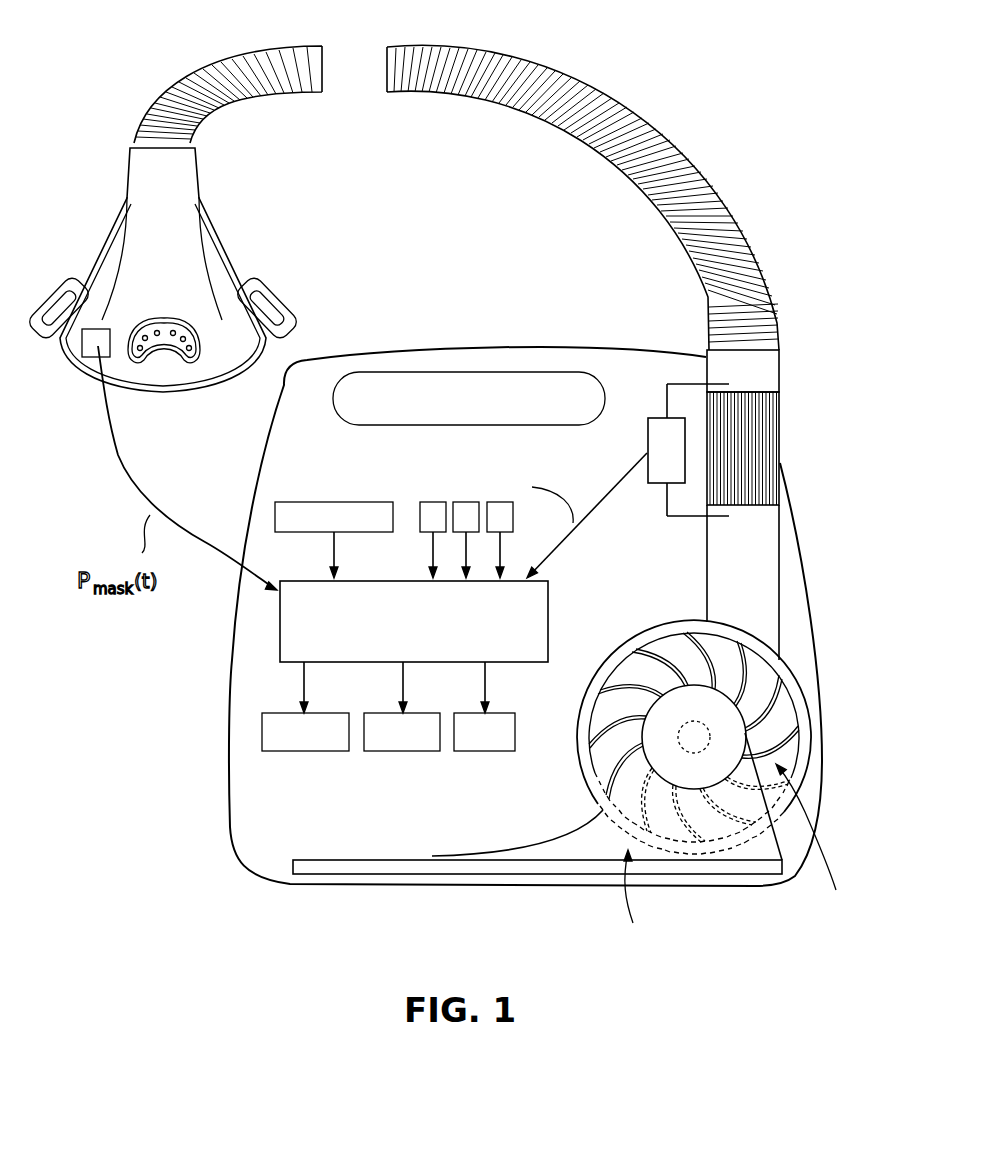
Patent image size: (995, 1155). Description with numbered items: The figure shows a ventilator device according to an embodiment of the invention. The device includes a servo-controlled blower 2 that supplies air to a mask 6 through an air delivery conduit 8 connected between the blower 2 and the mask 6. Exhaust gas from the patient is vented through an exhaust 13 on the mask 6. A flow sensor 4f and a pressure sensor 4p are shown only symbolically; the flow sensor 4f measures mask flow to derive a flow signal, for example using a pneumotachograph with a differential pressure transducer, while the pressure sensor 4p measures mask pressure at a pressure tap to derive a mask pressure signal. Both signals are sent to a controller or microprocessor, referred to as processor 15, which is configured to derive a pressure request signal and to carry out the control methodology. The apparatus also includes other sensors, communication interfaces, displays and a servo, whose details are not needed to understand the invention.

The servo-controlled blower 2 is at (522, 649).
The flow sensor 4f is at (636, 437).
The pressure sensor 4p is at (92, 357).
The mask 6 is at (215, 292).
The air delivery conduit 8 is at (422, 83).
The exhaust 13 is at (203, 356).
The processor 15 is at (305, 615).